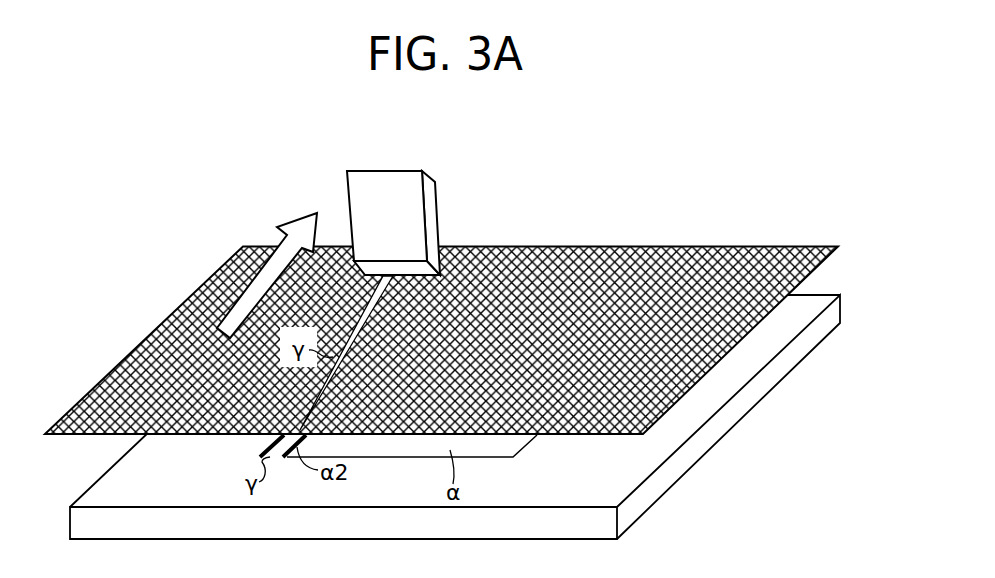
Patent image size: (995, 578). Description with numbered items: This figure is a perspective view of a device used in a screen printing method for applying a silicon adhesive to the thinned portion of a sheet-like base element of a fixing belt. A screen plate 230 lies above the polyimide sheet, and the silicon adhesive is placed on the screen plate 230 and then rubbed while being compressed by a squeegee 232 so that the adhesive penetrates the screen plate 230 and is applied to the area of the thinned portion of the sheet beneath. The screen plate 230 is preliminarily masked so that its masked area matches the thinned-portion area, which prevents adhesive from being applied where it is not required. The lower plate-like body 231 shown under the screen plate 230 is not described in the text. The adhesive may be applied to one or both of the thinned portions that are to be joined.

The screen plate 230 is at (575, 246).
The substrate plate 231 is at (688, 415).
The squeegee 232 is at (385, 178).